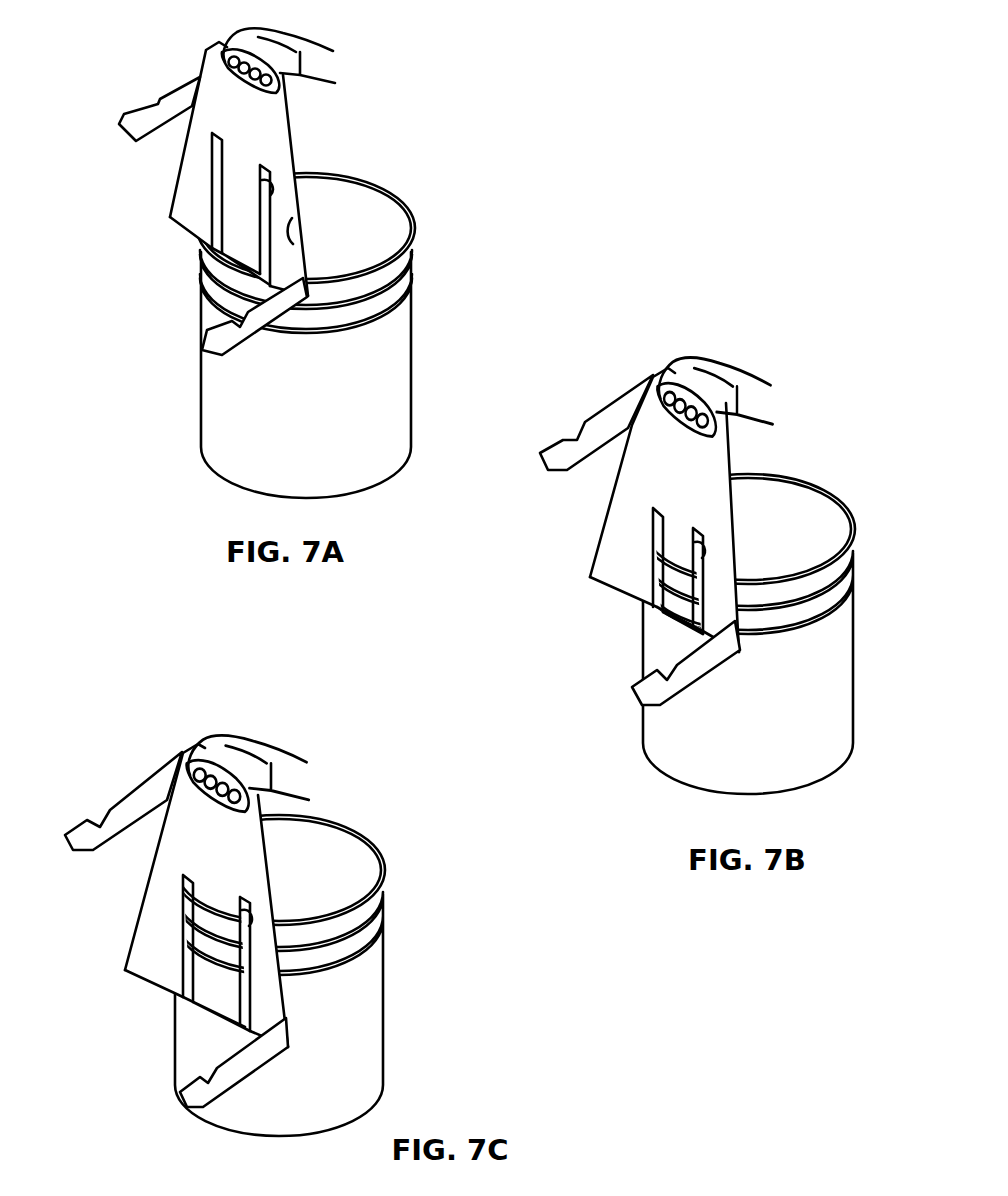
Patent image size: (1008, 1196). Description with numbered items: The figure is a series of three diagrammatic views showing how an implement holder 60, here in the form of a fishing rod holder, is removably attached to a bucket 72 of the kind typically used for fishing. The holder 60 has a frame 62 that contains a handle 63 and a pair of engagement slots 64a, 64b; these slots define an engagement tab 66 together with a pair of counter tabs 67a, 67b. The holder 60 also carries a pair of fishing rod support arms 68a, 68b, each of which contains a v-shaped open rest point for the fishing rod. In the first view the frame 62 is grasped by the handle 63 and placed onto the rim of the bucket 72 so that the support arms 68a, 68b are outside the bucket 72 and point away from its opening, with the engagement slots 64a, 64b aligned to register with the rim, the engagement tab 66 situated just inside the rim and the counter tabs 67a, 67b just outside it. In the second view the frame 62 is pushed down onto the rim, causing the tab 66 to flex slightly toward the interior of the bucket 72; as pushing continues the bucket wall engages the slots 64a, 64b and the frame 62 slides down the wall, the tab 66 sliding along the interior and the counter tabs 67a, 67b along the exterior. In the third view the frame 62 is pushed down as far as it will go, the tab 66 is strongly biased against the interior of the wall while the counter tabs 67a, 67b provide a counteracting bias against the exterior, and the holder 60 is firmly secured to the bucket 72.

In FIG. 7A, the implement holder 60 is at (350, 120).
In FIG. 7B, the implement holder 60 is at (798, 410).
In FIG. 7C, the implement holder 60 is at (340, 798).
In FIG. 7A, the frame 62 is at (297, 157).
In FIG. 7B, the frame 62 is at (723, 460).
In FIG. 7C, the frame 62 is at (258, 843).
In FIG. 7A, the handle 63 is at (218, 48).
In FIG. 7B, the handle 63 is at (657, 375).
In FIG. 7C, the handle 63 is at (187, 755).
In FIG. 7A, the engagement slot 64a is at (210, 158).
In FIG. 7B, the engagement slot 64a is at (653, 530).
In FIG. 7C, the engagement slot 64a is at (183, 893).
In FIG. 7A, the engagement slot 64b is at (275, 208).
In FIG. 7B, the engagement slot 64b is at (703, 548).
In FIG. 7C, the engagement slot 64b is at (240, 907).
In FIG. 7A, the engagement tab 66 is at (256, 224).
In FIG. 7B, the engagement tab 66 is at (683, 543).
In FIG. 7C, the engagement tab 66 is at (223, 900).
In FIG. 7A, the counter tab 67a is at (187, 197).
In FIG. 7B, the counter tab 67a is at (627, 558).
In FIG. 7C, the counter tab 67a is at (147, 962).
In FIG. 7A, the counter tab 67b is at (293, 244).
In FIG. 7B, the counter tab 67b is at (717, 588).
In FIG. 7C, the counter tab 67b is at (260, 985).
In FIG. 7A, the fishing rod support arm 68a is at (176, 103).
In FIG. 7B, the fishing rod support arm 68a is at (598, 435).
In FIG. 7C, the fishing rod support arm 68a is at (135, 810).
In FIG. 7A, the fishing rod support arm 68b is at (256, 322).
In FIG. 7B, the fishing rod support arm 68b is at (705, 655).
In FIG. 7C, the fishing rod support arm 68b is at (270, 1042).
In FIG. 7A, the bucket 72 is at (402, 349).
In FIG. 7B, the bucket 72 is at (840, 688).
In FIG. 7C, the bucket 72 is at (375, 997).